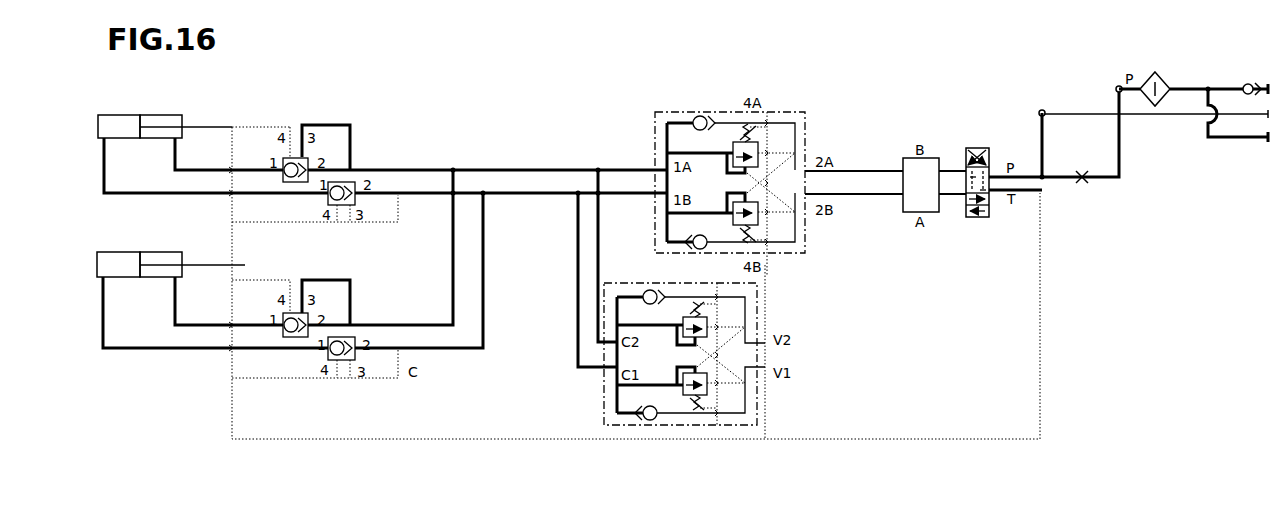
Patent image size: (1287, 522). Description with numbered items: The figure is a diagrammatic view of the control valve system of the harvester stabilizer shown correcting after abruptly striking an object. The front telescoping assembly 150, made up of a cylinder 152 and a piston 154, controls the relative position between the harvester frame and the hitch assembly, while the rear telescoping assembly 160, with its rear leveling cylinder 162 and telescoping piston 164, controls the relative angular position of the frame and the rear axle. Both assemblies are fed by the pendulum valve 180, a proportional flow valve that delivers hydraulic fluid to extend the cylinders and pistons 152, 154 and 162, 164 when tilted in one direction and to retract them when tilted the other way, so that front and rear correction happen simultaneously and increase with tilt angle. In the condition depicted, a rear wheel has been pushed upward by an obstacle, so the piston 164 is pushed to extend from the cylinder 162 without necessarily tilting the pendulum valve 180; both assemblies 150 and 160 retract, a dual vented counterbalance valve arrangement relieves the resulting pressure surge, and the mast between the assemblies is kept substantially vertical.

The telescoping assembly 150 is at (178, 102).
The cylinder 152 is at (100, 120).
The piston 154 is at (162, 107).
The rear telescoping assembly 160 is at (183, 243).
The rear leveling cylinder 162 is at (100, 260).
The telescoping piston 164 is at (162, 245).
The pendulum valve 180 is at (990, 223).